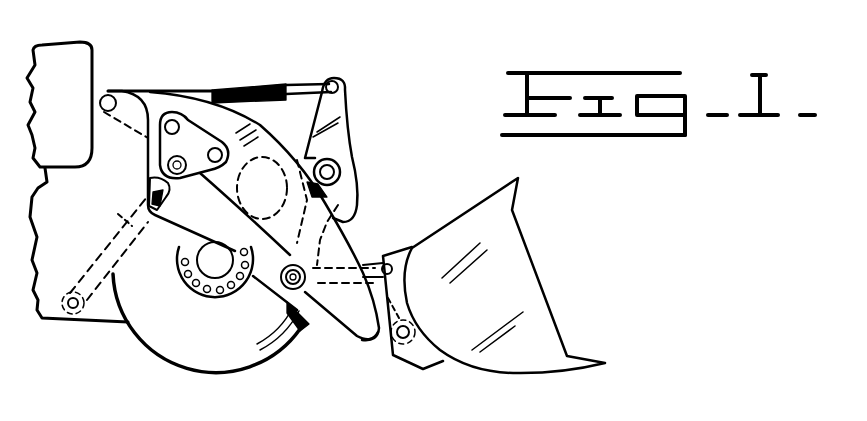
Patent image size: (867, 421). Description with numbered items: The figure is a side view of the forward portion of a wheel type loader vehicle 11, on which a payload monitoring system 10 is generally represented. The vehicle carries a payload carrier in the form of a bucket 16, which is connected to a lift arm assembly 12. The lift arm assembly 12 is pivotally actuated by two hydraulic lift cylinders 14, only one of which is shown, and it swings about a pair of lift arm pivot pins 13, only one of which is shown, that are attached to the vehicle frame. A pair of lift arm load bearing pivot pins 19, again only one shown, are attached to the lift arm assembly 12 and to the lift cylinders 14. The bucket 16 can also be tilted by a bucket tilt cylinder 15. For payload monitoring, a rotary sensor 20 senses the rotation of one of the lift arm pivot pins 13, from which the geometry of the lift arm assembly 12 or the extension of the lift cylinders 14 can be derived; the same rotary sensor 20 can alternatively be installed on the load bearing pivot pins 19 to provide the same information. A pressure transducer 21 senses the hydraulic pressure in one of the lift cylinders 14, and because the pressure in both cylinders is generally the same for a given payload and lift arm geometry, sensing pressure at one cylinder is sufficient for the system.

The payload monitoring system 10 is at (412, 68).
The wheel type loader vehicle 11 is at (59, 104).
The lift arm assembly 12 is at (172, 102).
The lift arm pivot pin 13 is at (108, 94).
The hydraulic lift cylinder 14 is at (184, 190).
The bucket tilt cylinder 15 is at (254, 88).
The bucket 16 is at (477, 220).
The lift arm load bearing pivot pin 19 is at (165, 164).
The rotary sensor 20 is at (112, 90).
The pressure transducer 21 is at (108, 222).